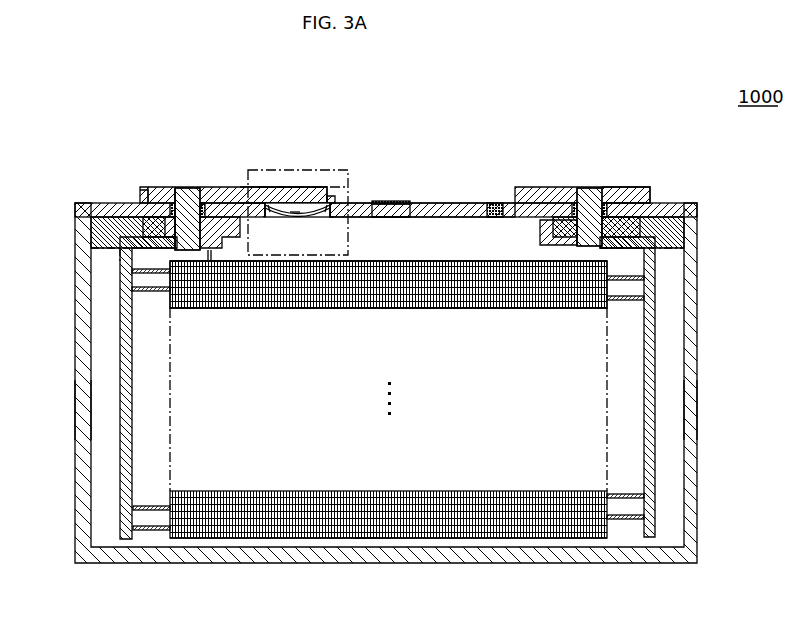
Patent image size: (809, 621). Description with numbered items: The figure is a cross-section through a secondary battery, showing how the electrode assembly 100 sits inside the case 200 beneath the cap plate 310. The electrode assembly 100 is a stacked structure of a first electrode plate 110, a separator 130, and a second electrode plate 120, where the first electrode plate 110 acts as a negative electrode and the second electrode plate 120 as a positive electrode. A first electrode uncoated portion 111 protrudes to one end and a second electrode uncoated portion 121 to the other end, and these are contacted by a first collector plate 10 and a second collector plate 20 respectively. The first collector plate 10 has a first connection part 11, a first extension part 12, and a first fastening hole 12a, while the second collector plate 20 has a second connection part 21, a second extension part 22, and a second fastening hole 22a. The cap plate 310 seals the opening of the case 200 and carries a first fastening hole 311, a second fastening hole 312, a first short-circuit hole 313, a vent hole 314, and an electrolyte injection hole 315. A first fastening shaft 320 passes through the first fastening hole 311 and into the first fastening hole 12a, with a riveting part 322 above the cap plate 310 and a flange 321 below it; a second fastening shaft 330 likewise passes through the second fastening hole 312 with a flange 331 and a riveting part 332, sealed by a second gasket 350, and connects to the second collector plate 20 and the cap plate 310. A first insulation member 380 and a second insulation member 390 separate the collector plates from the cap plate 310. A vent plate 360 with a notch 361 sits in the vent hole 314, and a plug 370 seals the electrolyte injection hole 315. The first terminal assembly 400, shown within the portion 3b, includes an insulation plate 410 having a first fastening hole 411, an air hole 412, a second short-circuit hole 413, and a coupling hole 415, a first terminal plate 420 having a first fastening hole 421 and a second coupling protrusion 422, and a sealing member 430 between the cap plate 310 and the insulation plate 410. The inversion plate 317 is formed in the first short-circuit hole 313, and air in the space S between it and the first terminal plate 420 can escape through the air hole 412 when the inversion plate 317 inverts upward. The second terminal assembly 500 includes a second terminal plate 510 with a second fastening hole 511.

The case 200 is at (690, 299).
The first connection part 11 is at (90, 408).
The second connection part 21 is at (690, 407).
The first extension part 12 is at (130, 212).
The second extension part 22 is at (640, 213).
The first fastening hole 12a is at (130, 255).
The second fastening hole 22a is at (620, 252).
The cap plate 310 is at (455, 203).
The first insulation member 380 is at (100, 232).
The second insulation member 390 is at (665, 234).
The first terminal plate 420 is at (148, 188).
The second coupling protrusion 422 is at (142, 190).
The first fastening hole 421 is at (170, 190).
The air hole 412 is at (262, 192).
The coupling hole 415 is at (331, 196).
The first fastening shaft 320 is at (188, 188).
The first fastening hole 311 is at (176, 200).
The riveting part 322 is at (203, 203).
The flange 321 is at (238, 232).
The first collector plate 10 is at (120, 342).
The first fastening hole 411 is at (211, 300).
The first terminal assembly 400 is at (343, 156).
The portion 3b is at (248, 187).
The insulation plate 410 is at (333, 200).
The second short-circuit hole 413 is at (298, 205).
The space S is at (298, 208).
The first short-circuit hole 313 is at (318, 219).
The inversion plate 317 is at (290, 260).
The sealing member 430 is at (343, 219).
The vent plate 360 is at (376, 201).
The notch 361 is at (405, 204).
The vent hole 314 is at (395, 217).
The plug 370 is at (493, 203).
The electrolyte injection hole 315 is at (492, 217).
The second gasket 350 is at (533, 187).
The second fastening hole 312 is at (606, 190).
The second fastening shaft 330 is at (590, 188).
The riveting part 332 is at (574, 203).
The flange 331 is at (550, 234).
The second collector plate 20 is at (655, 336).
The electrode assembly 100 is at (470, 541).
The first electrode plate 110 is at (274, 540).
The second electrode plate 120 is at (533, 540).
The separator 130 is at (400, 540).
The second fastening hole 511 is at (548, 310).
The second terminal plate 510 is at (587, 310).
The second terminal assembly 500 is at (597, 348).
The first electrode uncoated portion 111 is at (150, 530).
The second electrode uncoated portion 121 is at (625, 520).